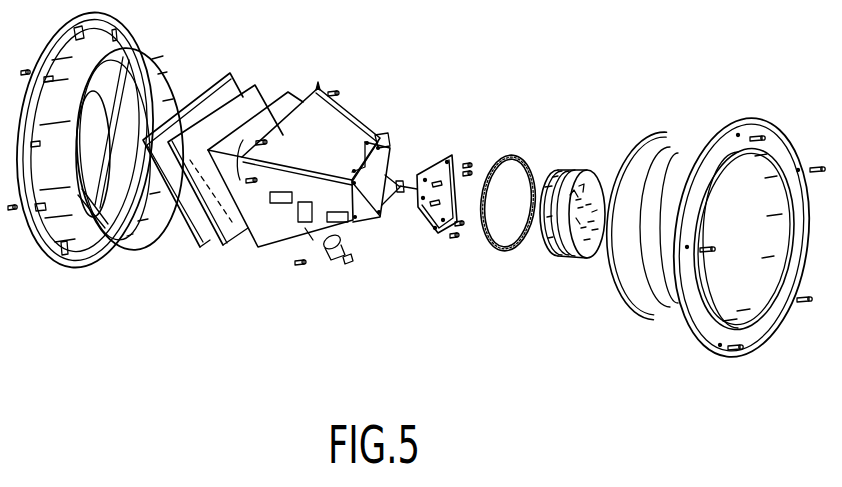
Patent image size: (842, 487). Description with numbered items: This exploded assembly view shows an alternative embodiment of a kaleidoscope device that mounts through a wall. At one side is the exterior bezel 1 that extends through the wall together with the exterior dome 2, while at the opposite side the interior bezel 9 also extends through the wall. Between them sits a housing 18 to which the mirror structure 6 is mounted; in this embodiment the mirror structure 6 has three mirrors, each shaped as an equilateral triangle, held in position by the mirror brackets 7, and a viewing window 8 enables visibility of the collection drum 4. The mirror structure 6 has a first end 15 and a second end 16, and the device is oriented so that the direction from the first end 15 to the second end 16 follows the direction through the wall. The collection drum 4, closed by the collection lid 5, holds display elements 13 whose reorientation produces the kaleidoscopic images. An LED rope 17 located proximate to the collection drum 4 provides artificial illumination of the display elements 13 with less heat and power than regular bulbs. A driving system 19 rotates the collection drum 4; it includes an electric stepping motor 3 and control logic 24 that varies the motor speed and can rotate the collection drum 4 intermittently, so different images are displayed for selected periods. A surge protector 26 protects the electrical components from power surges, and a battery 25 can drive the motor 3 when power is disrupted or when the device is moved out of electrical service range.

The exterior bezel 1 is at (708, 345).
The exterior dome 2 is at (637, 288).
The electric motor 3 is at (333, 253).
The collection drum 4 is at (549, 228).
The collection lid 5 is at (575, 258).
The mirror structure 6 is at (263, 242).
The mirror brackets 7 is at (281, 205).
The viewing window 8 is at (208, 244).
The interior bezel 9 is at (80, 237).
The display elements 13 is at (582, 195).
The first end 15 is at (394, 163).
The second end 16 is at (269, 105).
The LED rope 17 is at (495, 252).
The housing 18 is at (366, 128).
The driving system 19 is at (312, 261).
The control logic 24 is at (305, 201).
The battery 25 is at (340, 222).
The surge protector 26 is at (275, 240).